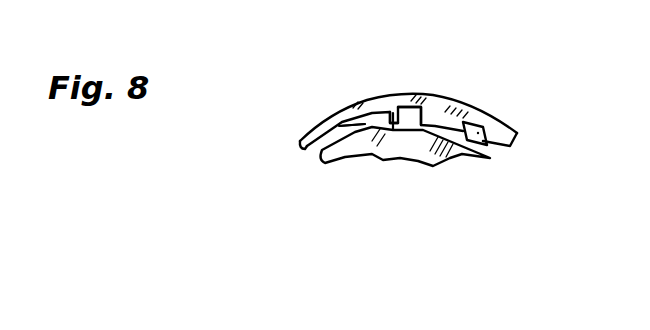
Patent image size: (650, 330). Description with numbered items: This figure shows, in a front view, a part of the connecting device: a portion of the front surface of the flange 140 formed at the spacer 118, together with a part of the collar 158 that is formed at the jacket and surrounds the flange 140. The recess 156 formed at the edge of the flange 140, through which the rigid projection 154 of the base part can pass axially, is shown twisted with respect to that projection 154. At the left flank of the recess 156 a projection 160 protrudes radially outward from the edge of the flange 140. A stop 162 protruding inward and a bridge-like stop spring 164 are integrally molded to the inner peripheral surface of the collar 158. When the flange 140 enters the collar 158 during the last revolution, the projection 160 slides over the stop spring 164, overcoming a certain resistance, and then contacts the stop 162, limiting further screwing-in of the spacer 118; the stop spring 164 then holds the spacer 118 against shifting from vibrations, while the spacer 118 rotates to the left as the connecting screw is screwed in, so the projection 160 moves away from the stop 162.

The spacer 118 is at (452, 160).
The flange 140 is at (372, 162).
The projection 154 is at (503, 124).
The recess 156 is at (412, 152).
The collar 158 is at (455, 95).
The projection 160 is at (382, 100).
The stop 162 is at (405, 98).
The stop spring 164 is at (345, 120).